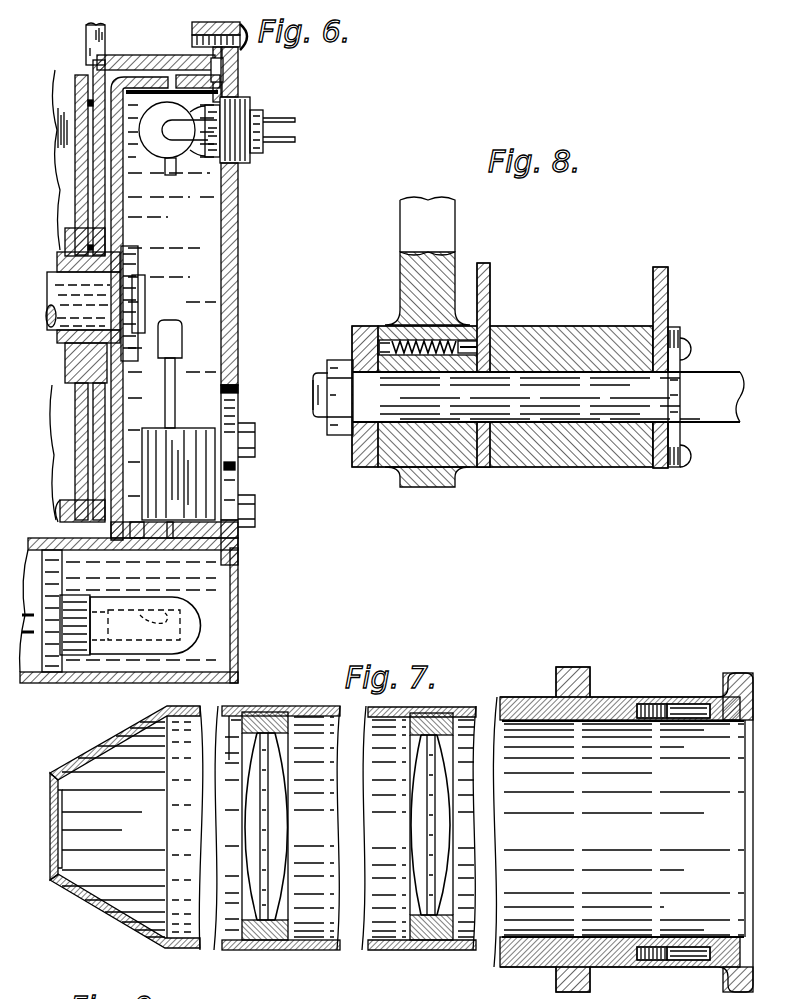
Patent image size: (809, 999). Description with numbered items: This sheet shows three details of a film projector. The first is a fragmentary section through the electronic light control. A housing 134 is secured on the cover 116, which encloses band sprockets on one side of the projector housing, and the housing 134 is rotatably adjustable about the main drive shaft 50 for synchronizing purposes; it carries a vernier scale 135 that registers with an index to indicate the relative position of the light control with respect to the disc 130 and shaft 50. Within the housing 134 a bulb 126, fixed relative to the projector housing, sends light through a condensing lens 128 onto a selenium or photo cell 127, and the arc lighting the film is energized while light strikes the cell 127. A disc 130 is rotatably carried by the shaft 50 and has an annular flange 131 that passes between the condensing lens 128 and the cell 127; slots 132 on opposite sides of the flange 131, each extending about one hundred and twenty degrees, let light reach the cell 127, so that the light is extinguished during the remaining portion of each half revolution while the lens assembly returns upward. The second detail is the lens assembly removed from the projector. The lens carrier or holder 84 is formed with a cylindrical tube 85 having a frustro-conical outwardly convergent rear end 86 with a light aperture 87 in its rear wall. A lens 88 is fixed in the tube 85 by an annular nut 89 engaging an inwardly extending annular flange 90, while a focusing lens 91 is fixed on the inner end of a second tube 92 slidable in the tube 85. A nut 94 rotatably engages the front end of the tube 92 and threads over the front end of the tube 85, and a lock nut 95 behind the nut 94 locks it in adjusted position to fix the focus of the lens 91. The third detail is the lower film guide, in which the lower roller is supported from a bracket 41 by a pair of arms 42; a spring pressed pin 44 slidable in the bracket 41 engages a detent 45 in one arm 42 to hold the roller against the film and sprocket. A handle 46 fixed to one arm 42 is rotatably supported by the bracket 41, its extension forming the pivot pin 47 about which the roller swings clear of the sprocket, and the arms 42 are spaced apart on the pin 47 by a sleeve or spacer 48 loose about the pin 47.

In FIG. 6, the vernier scale 135 is at (86, 35).
In FIG. 6, the cover 116 is at (80, 88).
In FIG. 6, the main drive shaft 50 is at (66, 297).
In FIG. 6, the disc 130 is at (126, 218).
In FIG. 6, the bulb 126 is at (184, 160).
In FIG. 6, the housing 134 is at (239, 266).
In FIG. 6, the condensing lens 128 is at (182, 438).
In FIG. 6, the slots 132 is at (172, 403).
In FIG. 6, the flange 131 is at (140, 530).
In FIG. 6, the selenium or photo cell 127 is at (200, 624).
In FIG. 8, the bracket 41 is at (403, 262).
In FIG. 8, the arms 42 is at (491, 284).
In FIG. 8, the spring pressed pin 44 is at (472, 345).
In FIG. 8, the detent 45 is at (496, 350).
In FIG. 8, the handle 46 is at (740, 385).
In FIG. 8, the pivot pin 47 is at (566, 420).
In FIG. 8, the sleeve or spacer 48 is at (583, 465).
In FIG. 7, the lens carrier or holder 84 is at (462, 710).
In FIG. 7, the cylindrical body or tube 85 is at (328, 714).
In FIG. 7, the frustro-conical rear end 86 is at (134, 736).
In FIG. 7, the light aperture 87 is at (52, 850).
In FIG. 7, the lens 88 is at (276, 832).
In FIG. 7, the annular nut 89 is at (284, 732).
In FIG. 7, the annular flange 90 is at (242, 932).
In FIG. 7, the focusing lens 91 is at (418, 822).
In FIG. 7, the second tube 92 is at (666, 724).
In FIG. 7, the nut 94 is at (664, 696).
In FIG. 7, the lock nut 95 is at (586, 668).